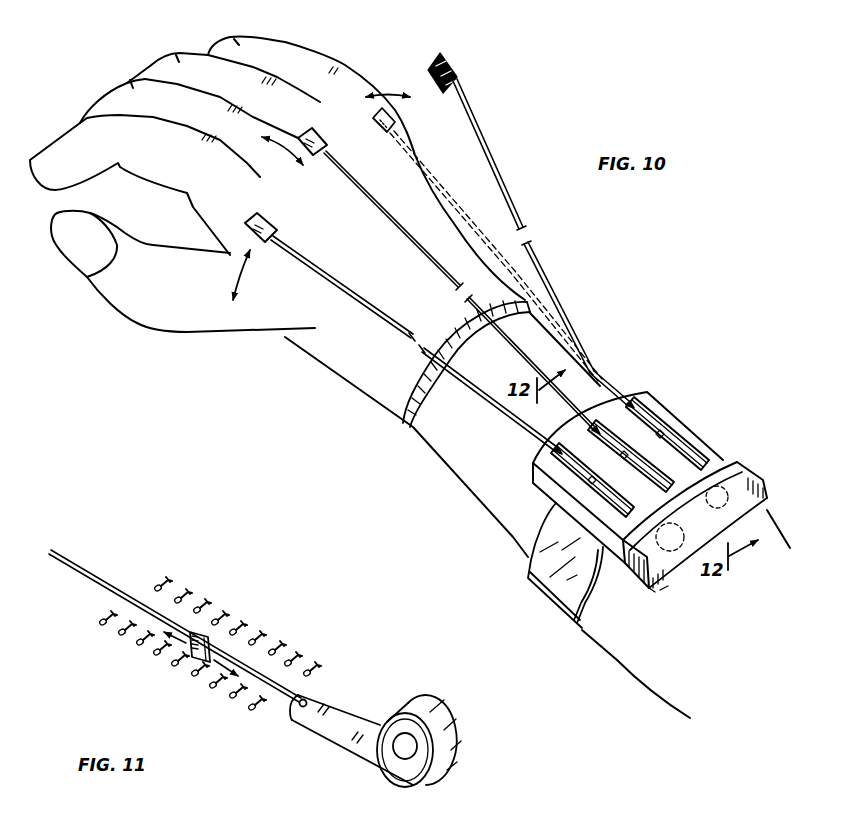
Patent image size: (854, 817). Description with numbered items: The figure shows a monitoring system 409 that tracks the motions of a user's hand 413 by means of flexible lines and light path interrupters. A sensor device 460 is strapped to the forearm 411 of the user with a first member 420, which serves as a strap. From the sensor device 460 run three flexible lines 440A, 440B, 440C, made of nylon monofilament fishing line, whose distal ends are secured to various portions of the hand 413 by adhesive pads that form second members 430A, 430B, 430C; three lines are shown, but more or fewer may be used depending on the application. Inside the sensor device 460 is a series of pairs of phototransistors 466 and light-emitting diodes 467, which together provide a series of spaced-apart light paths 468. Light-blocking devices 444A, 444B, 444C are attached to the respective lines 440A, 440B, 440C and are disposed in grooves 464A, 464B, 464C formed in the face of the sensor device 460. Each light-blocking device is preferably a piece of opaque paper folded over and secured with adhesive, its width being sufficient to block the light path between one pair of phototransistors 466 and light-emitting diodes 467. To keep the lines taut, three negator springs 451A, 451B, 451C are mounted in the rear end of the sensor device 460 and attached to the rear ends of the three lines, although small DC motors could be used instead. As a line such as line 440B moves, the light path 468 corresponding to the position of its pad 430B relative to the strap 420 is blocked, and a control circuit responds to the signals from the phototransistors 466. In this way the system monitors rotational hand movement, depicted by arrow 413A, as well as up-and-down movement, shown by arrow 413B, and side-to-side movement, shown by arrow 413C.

In FIG. 10, the monitoring system 409 is at (719, 366).
In FIG. 10, the forearm 411 is at (657, 697).
In FIG. 10, the hand 413 is at (277, 49).
In FIG. 10, the arrow 413A is at (240, 283).
In FIG. 10, the arrow 413B is at (268, 148).
In FIG. 10, the arrow 413C is at (383, 103).
In FIG. 10, the first member 420 is at (528, 584).
In FIG. 10, the second member 430A is at (247, 220).
In FIG. 10, the second member 430B is at (330, 128).
In FIG. 10, the second member 430C is at (458, 57).
In FIG. 10, the flexible line 440A is at (303, 251).
In FIG. 10, the flexible line 440B is at (348, 183).
In FIG. 11, the flexible line 440B is at (67, 556).
In FIG. 10, the flexible line 440C is at (493, 170).
In FIG. 10, the light-blocking device 444A is at (568, 478).
In FIG. 10, the light-blocking device 444B is at (626, 452).
In FIG. 11, the light-blocking device 444B is at (192, 662).
In FIG. 10, the light-blocking device 444C is at (665, 430).
In FIG. 10, the negator spring 451A is at (662, 578).
In FIG. 10, the negator spring 451B is at (759, 521).
In FIG. 11, the negator spring 451B is at (460, 736).
In FIG. 10, the negator spring 451C is at (745, 468).
In FIG. 10, the sensor device 460 is at (692, 421).
In FIG. 10, the groove 464A is at (588, 480).
In FIG. 10, the groove 464B is at (620, 440).
In FIG. 10, the groove 464C is at (700, 445).
In FIG. 11, the phototransistor 466 is at (160, 584).
In FIG. 11, the light-emitting diode 467 is at (95, 622).
In FIG. 11, the light path 468 is at (118, 612).